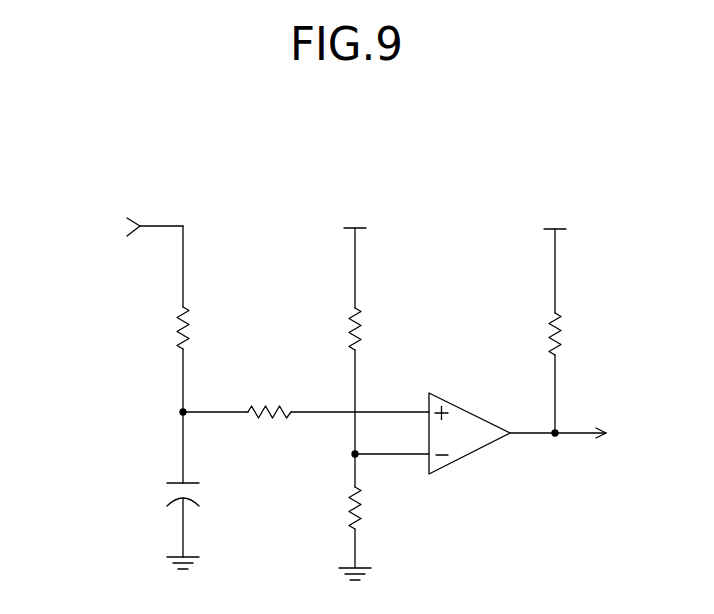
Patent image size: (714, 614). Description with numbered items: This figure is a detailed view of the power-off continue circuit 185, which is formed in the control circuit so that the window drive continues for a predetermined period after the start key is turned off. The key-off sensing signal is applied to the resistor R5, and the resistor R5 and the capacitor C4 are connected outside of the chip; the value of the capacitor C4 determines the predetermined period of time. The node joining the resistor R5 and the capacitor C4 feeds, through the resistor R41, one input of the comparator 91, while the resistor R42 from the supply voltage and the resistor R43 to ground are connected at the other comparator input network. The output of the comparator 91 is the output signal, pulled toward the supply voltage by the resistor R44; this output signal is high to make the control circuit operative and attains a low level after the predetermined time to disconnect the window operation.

The power-off continue circuit 185 is at (518, 130).
The comparator 91 is at (482, 451).
The resistor R5 is at (161, 328).
The capacitor C4 is at (159, 495).
The resistor R41 is at (267, 395).
The resistor R42 is at (385, 330).
The resistor R43 is at (385, 508).
The resistor R44 is at (590, 334).